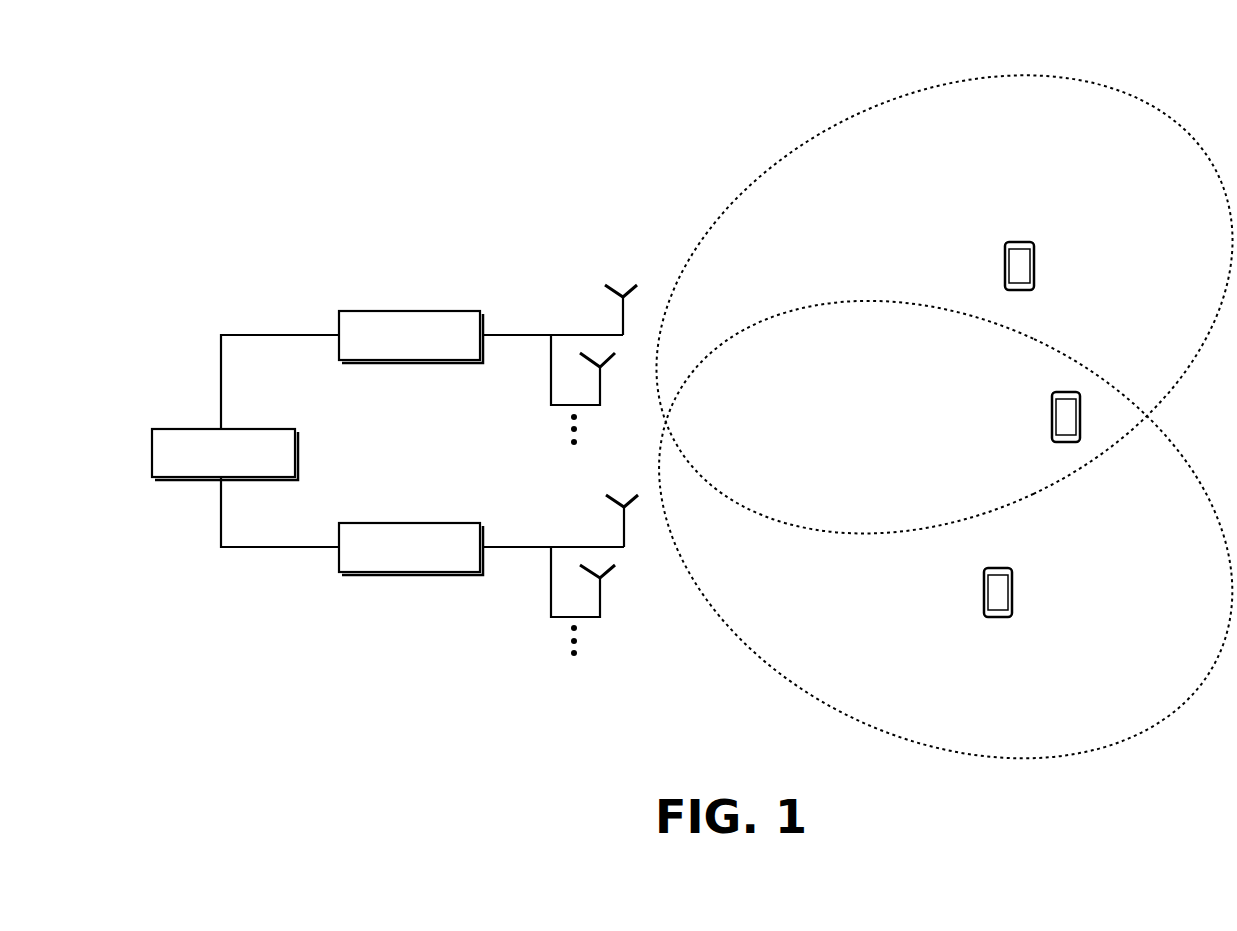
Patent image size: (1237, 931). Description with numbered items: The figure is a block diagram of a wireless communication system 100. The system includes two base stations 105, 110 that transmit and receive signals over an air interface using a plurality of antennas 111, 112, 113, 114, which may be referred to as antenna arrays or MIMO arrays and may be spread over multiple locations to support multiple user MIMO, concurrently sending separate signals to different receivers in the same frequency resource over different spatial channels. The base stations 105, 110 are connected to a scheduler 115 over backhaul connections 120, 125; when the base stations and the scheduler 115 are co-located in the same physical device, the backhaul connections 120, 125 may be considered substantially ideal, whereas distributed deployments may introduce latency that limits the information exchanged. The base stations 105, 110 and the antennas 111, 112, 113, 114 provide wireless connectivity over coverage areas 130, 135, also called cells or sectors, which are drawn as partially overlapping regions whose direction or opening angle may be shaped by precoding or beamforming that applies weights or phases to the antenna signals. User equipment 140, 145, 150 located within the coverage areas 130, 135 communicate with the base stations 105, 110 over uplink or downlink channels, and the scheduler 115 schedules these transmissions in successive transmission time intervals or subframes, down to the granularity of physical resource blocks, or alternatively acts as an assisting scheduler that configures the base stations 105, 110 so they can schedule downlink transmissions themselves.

The wireless communication system 100 is at (280, 118).
The base station 105 is at (387, 307).
The base station 110 is at (387, 520).
The antenna 111 is at (622, 312).
The antenna 112 is at (602, 393).
The antenna 113 is at (622, 523).
The antenna 114 is at (602, 605).
The scheduler 115 is at (298, 452).
The backhaul connection 120 is at (268, 330).
The backhaul connection 125 is at (268, 550).
The coverage area 130 is at (767, 170).
The coverage area 135 is at (742, 641).
The user equipment 140 is at (1037, 270).
The user equipment 145 is at (1050, 420).
The user equipment 150 is at (1015, 592).